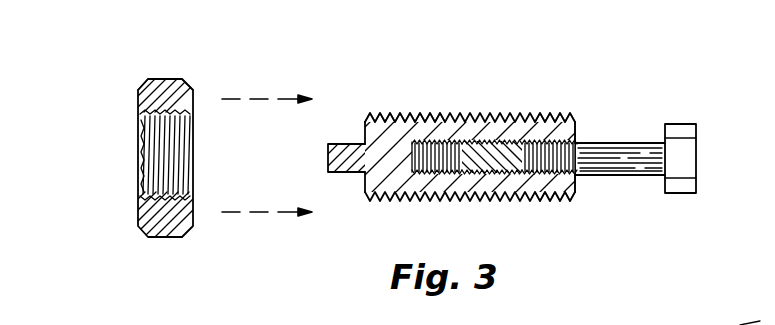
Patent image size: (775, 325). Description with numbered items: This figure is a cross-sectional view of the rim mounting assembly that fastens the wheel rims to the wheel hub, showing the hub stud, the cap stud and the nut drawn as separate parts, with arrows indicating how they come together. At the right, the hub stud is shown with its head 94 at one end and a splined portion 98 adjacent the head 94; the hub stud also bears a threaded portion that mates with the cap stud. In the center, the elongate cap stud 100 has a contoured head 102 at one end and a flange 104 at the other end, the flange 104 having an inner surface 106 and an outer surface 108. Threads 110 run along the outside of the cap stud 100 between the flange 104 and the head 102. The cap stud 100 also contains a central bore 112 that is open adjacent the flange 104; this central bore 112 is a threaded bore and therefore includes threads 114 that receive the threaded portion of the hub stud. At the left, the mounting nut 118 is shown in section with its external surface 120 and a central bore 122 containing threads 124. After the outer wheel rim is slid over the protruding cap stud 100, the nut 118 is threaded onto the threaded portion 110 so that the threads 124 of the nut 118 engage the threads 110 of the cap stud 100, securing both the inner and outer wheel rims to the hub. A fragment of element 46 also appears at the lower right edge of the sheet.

The fitting 46 is at (730, 322).
The head 94 is at (682, 155).
The splined portion 98 is at (637, 153).
The cap stud 100 is at (377, 209).
The contoured head 102 is at (330, 154).
The flange 104 is at (571, 120).
The inner surface 106 is at (576, 198).
The outer surface 108 is at (565, 196).
The threads 110 is at (400, 124).
The central bore 112 is at (440, 137).
The threads 114 is at (435, 178).
The mounting nut 118 is at (193, 103).
The external surface 120 is at (184, 52).
The central bore 122 is at (160, 155).
The threads 124 is at (140, 130).